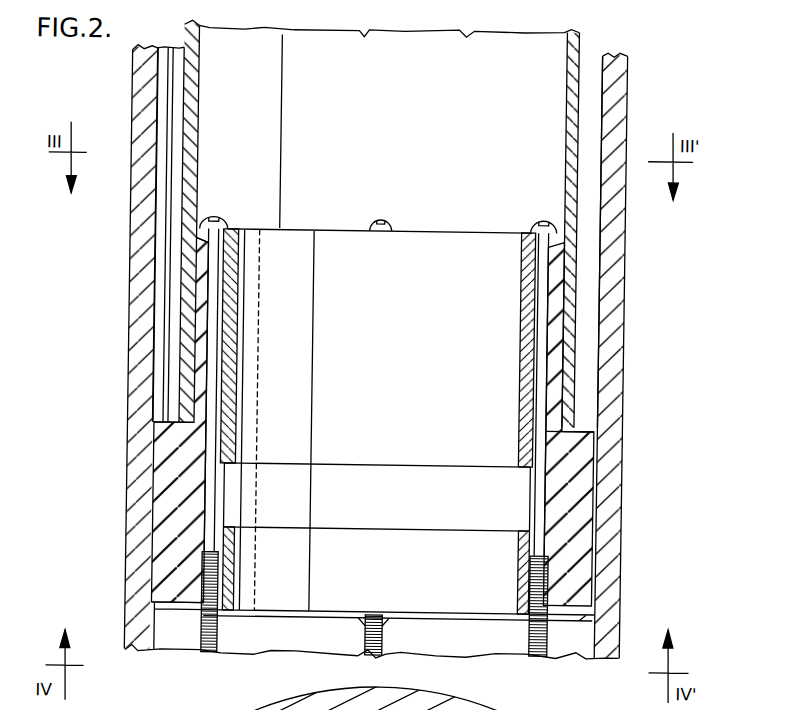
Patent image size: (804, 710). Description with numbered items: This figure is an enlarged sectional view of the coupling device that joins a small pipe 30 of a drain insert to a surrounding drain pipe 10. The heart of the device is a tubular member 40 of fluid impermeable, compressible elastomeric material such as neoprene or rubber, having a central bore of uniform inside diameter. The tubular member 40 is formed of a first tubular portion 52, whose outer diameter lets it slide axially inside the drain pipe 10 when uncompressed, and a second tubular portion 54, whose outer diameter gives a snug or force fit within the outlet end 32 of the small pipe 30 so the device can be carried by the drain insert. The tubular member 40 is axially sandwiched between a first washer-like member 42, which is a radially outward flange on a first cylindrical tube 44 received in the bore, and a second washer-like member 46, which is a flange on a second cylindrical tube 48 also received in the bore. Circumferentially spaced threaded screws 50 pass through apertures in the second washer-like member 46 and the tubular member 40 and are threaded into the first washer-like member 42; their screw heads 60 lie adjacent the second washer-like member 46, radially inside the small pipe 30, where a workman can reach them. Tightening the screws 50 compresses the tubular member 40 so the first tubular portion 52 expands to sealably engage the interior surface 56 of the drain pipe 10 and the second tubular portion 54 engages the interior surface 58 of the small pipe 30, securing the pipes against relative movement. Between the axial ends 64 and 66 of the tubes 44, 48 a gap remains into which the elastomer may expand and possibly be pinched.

The drain pipe 10 is at (615, 218).
The small pipe 30 is at (566, 221).
The outlet end 32 is at (571, 432).
The tubular member 40 is at (577, 485).
The first washer-like member 42 is at (184, 615).
The first cylindrical tube 44 is at (240, 572).
The second washer-like member 46 is at (203, 240).
The second cylindrical tube 48 is at (238, 320).
The threaded screws 50 is at (542, 523).
The first tubular portion 52 is at (182, 516).
The second tubular portion 54 is at (200, 372).
The interior surface of drain pipe 56 is at (595, 74).
The interior surface of small pipe 58 is at (555, 102).
The screw heads 60 is at (225, 223).
The axial end of first tube 64 is at (237, 472).
The axial end of second tube 66 is at (242, 524).